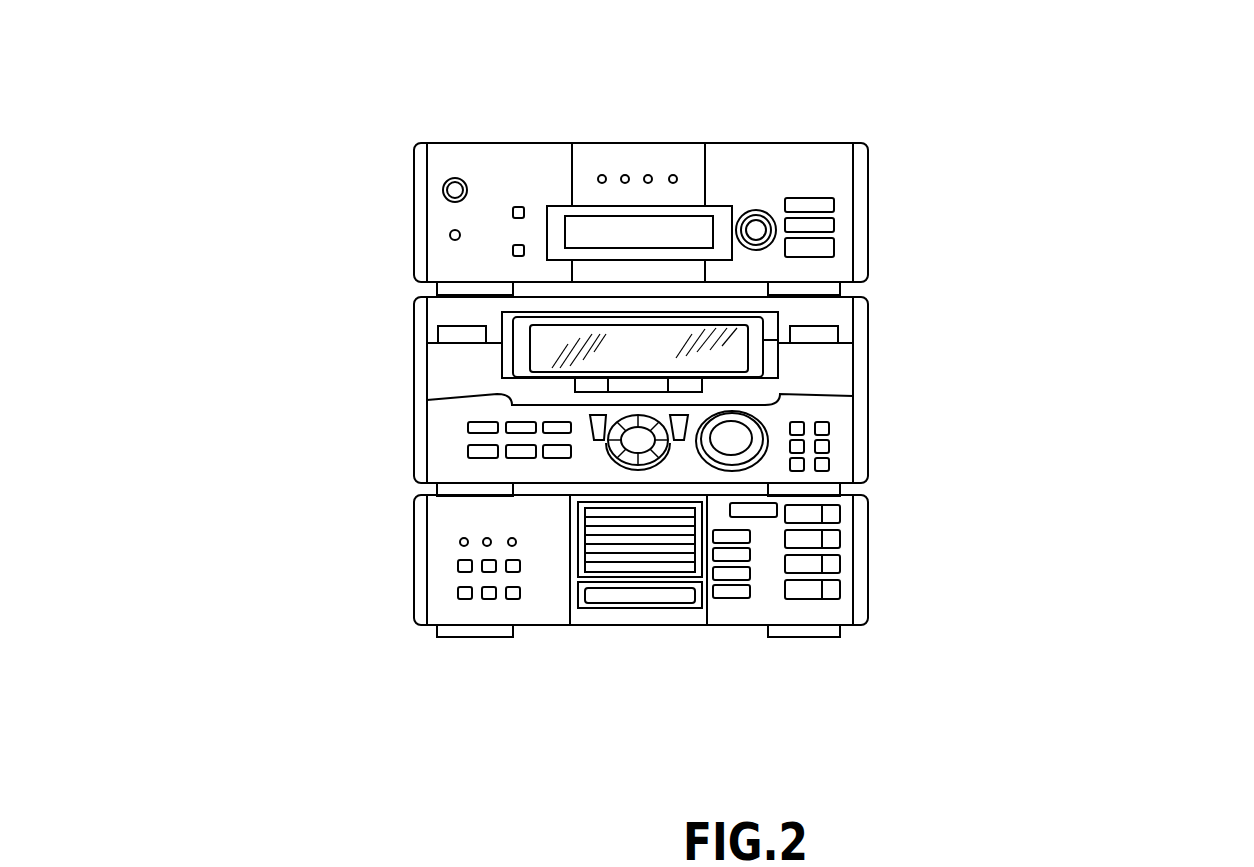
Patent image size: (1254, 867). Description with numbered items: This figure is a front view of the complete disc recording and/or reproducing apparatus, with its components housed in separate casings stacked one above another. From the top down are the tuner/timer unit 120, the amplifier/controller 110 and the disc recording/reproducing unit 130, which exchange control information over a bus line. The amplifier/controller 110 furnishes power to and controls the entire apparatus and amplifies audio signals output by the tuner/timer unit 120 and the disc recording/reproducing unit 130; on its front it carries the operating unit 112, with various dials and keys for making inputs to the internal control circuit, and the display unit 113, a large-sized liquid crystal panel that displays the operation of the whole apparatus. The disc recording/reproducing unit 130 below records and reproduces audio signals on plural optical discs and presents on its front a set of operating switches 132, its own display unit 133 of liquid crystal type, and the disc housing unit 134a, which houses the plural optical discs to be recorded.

The display unit 113 is at (627, 336).
The tuner/timer unit 120 is at (883, 140).
The amplifier/controller 110 is at (711, 263).
The operating unit 112 is at (458, 413).
The disc recording/reproducing unit 130 is at (804, 639).
The set of operating switches 132 is at (807, 602).
The disc housing unit 134a is at (665, 565).
The display unit 133 is at (600, 598).